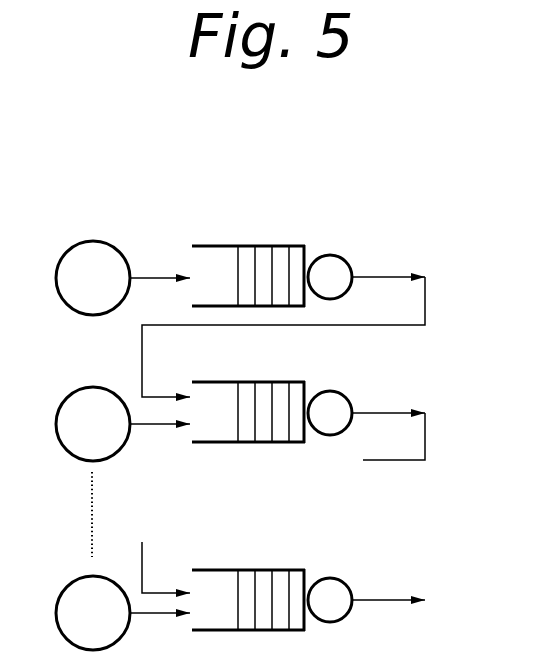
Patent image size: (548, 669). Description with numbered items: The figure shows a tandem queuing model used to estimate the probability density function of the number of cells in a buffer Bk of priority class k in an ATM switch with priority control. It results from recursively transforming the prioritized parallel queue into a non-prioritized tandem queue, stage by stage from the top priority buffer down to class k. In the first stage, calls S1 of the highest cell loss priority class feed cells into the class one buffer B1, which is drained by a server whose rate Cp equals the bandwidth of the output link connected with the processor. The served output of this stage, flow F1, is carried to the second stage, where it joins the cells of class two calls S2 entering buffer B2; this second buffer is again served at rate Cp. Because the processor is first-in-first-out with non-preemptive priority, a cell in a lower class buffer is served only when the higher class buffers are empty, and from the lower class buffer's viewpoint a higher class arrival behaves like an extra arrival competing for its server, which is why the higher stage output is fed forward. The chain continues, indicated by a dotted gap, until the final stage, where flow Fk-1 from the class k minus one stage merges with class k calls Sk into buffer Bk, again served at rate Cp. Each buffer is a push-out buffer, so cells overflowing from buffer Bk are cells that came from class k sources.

The class 1 call source S1 is at (123, 278).
The class 2 call source S2 is at (123, 424).
The class k call source Sk is at (123, 613).
The class 1 buffer B1 is at (248, 253).
The class 2 buffer B2 is at (248, 389).
The class k buffer Bk is at (248, 579).
The output link bandwidth (processor service rate) Cp is at (336, 418).
The class 1 output flow F1 is at (259, 337).
The class k−1 output flow Fk-1 is at (158, 548).